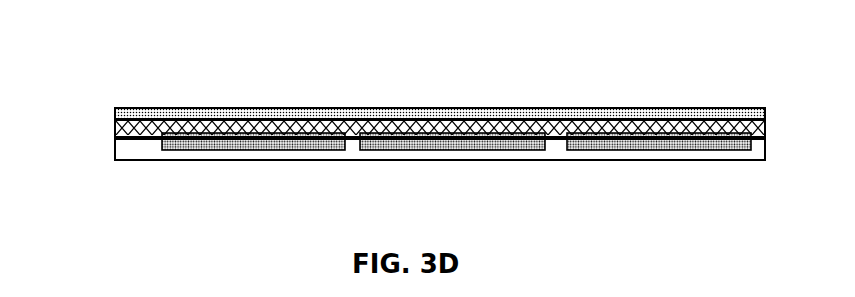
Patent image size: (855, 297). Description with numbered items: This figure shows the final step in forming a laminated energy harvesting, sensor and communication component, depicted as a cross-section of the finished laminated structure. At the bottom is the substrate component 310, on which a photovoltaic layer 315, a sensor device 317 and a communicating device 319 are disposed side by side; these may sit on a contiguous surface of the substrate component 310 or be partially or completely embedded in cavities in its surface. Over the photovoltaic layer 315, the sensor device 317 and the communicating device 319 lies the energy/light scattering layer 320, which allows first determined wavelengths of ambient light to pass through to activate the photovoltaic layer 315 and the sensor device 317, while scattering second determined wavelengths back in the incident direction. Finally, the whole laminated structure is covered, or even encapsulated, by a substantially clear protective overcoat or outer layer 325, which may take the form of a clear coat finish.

The substrate component 310 is at (133, 147).
The photovoltaic layer 315 is at (203, 145).
The sensor device 317 is at (408, 142).
The communicating device 319 is at (617, 143).
The energy/light scattering layer 320 is at (113, 130).
The protective overcoat or outer layer 325 is at (180, 108).